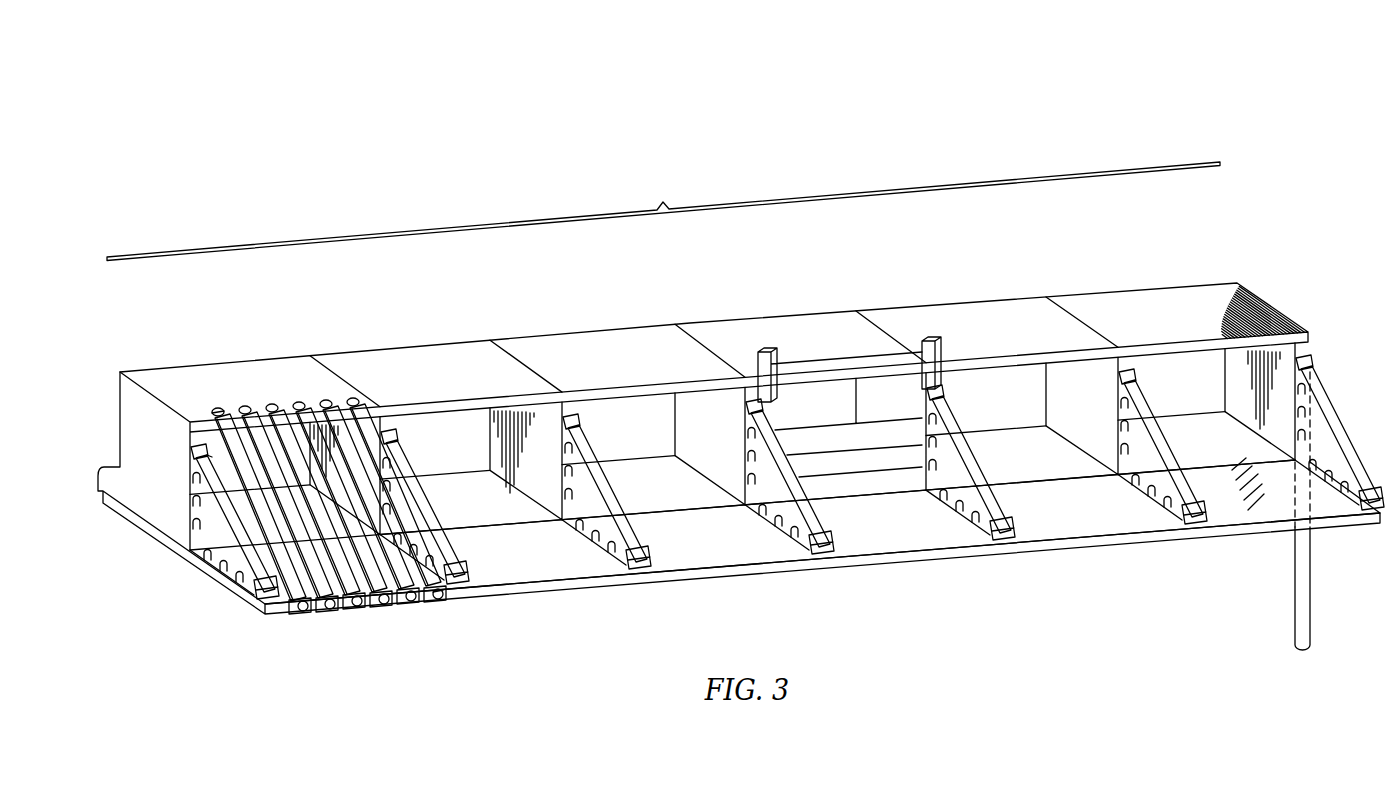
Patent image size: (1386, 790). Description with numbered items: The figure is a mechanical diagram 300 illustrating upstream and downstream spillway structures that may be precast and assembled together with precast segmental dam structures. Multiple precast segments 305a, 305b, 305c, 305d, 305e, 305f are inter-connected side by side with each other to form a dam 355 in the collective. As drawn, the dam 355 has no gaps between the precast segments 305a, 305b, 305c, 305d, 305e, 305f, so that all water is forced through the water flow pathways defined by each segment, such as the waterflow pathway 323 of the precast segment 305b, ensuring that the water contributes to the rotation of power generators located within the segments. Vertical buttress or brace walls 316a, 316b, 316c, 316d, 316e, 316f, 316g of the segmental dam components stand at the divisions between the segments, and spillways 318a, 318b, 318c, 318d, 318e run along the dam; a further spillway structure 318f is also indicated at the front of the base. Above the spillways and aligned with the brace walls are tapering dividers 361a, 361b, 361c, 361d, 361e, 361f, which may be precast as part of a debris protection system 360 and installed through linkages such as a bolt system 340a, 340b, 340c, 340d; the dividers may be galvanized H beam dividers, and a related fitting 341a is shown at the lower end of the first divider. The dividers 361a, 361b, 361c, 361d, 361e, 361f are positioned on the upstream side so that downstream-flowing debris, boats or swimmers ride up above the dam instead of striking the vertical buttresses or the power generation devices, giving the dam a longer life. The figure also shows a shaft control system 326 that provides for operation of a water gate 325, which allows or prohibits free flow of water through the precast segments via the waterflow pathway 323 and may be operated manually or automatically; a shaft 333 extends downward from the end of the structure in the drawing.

The mechanical diagram 300 is at (392, 100).
The precast segment 305a is at (302, 362).
The precast segment 305b is at (412, 358).
The precast segment 305c is at (628, 340).
The precast segment 305d is at (783, 330).
The precast segment 305e is at (1020, 310).
The precast segment 305f is at (1165, 298).
The vertical buttress or brace wall 316a is at (192, 486).
The vertical buttress or brace wall 316b is at (427, 527).
The vertical buttress or brace wall 316c is at (617, 518).
The vertical buttress or brace wall 316d is at (780, 449).
The vertical buttress or brace wall 316e is at (983, 484).
The vertical buttress or brace wall 316f is at (1168, 467).
The vertical buttress or brace wall 316g is at (1318, 385).
The spillway 318a is at (563, 563).
The spillway 318b is at (760, 550).
The spillway 318c is at (930, 537).
The spillway 318d is at (1097, 523).
The spillway 318e is at (1320, 498).
The base panel 318f is at (885, 570).
The waterflow pathway 323 is at (672, 497).
The water gate 325 is at (830, 440).
The shaft control system 326 is at (940, 345).
The pin 333 is at (1295, 636).
The bolt system 340a is at (250, 553).
The bolt system 340b is at (413, 610).
The bolt system 340c is at (832, 540).
The bolt system 340d is at (215, 405).
The bracket 341a is at (233, 563).
The dam 355 is at (663, 211).
The debris protection system 360 is at (226, 345).
The divider 361a is at (287, 617).
The divider 361b is at (262, 410).
The divider 361c is at (337, 610).
The divider 361d is at (380, 458).
The divider 361e is at (390, 605).
The divider 361f is at (427, 560).